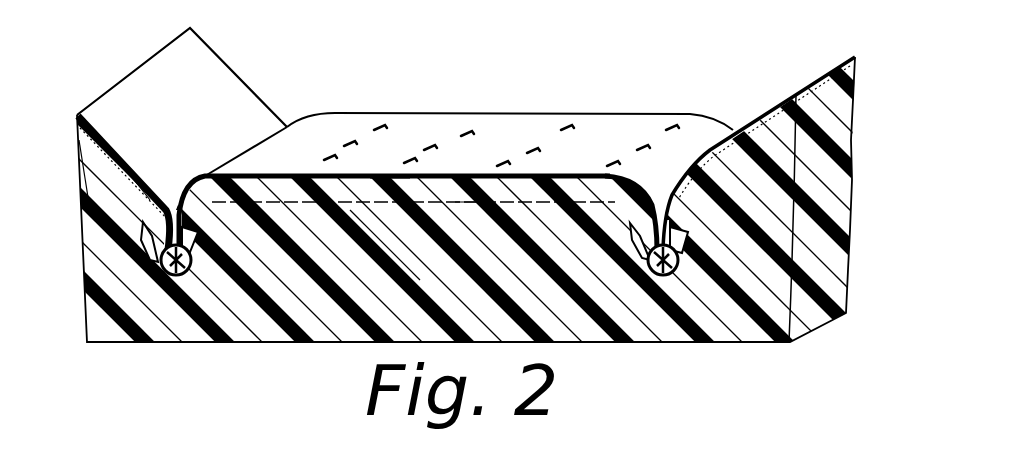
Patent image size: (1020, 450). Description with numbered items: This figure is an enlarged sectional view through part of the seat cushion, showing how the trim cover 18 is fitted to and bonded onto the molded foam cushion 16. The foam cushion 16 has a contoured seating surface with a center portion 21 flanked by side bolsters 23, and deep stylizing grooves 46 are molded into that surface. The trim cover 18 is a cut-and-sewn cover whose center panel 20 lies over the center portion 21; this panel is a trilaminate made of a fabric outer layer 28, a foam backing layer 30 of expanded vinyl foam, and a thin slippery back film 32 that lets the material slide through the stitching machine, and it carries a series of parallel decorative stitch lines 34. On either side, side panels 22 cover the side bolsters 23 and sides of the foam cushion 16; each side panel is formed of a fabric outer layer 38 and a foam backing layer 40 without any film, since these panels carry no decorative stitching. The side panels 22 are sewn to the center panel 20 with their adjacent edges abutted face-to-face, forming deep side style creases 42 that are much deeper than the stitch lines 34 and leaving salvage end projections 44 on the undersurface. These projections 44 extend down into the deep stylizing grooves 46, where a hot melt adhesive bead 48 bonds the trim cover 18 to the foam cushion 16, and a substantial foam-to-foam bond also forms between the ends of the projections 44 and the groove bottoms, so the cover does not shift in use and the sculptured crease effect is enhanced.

The foam cushion 16 is at (263, 313).
The trim cover 18 is at (142, 52).
The center panel 20 is at (611, 122).
The center portion 21 is at (464, 222).
The side panels 22 is at (213, 62).
The side bolsters 23 is at (110, 212).
The fabric outer layer 28 is at (387, 170).
The foam backing layer 30 is at (527, 203).
The back sheet or film 32 is at (360, 215).
The stitch lines 34 is at (330, 155).
The fabric outer layer 38 is at (92, 124).
The foam backing layer 40 is at (88, 181).
The side style creases 42 is at (250, 148).
The salvage end projections 44 is at (140, 273).
The deep stylizing grooves 46 is at (191, 272).
The hot melt adhesive bead 48 is at (163, 277).